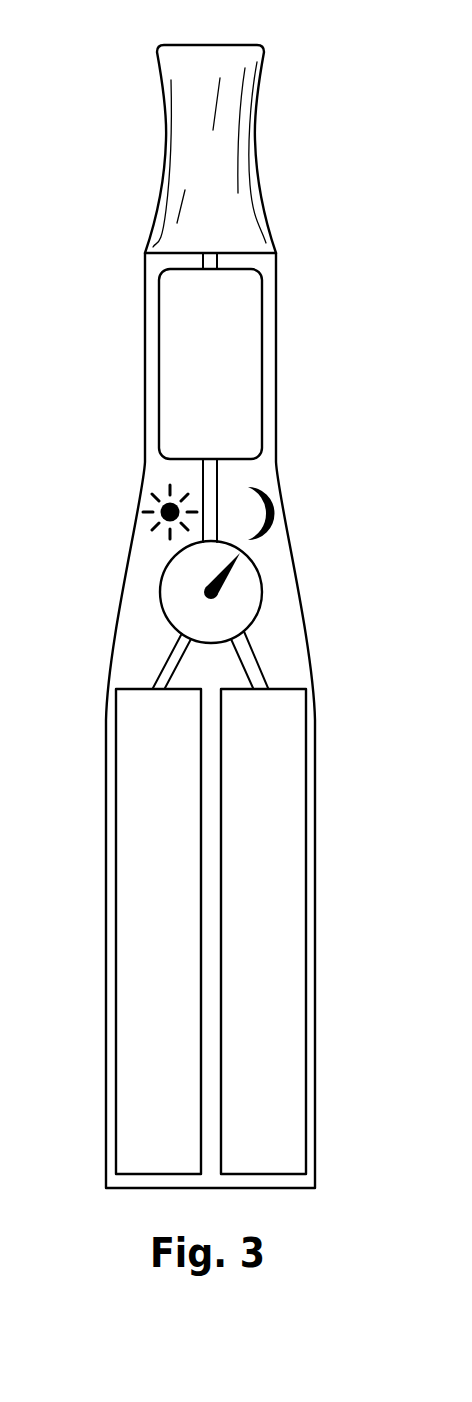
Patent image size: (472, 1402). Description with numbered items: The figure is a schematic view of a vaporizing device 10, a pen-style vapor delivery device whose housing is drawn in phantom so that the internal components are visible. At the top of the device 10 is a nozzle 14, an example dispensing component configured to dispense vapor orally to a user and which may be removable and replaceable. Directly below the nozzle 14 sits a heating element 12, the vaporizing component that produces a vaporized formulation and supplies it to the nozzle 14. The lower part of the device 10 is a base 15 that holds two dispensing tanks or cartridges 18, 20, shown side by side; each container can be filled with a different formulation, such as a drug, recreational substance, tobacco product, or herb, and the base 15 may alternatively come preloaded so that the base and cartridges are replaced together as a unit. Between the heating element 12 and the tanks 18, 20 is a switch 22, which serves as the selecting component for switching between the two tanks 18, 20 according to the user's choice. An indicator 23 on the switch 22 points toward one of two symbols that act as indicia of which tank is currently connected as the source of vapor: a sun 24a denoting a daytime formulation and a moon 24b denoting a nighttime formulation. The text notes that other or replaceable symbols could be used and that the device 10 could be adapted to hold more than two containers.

The vaporizing device 10 is at (316, 103).
The heating element 12 is at (240, 365).
The nozzle 14 is at (188, 167).
The base 15 is at (317, 1166).
The dispensing tank 18 is at (277, 782).
The dispensing tank 20 is at (143, 908).
The switch 22 is at (257, 618).
The indicator 23 is at (226, 583).
The sun symbol 24a is at (163, 506).
The moon symbol 24b is at (268, 496).